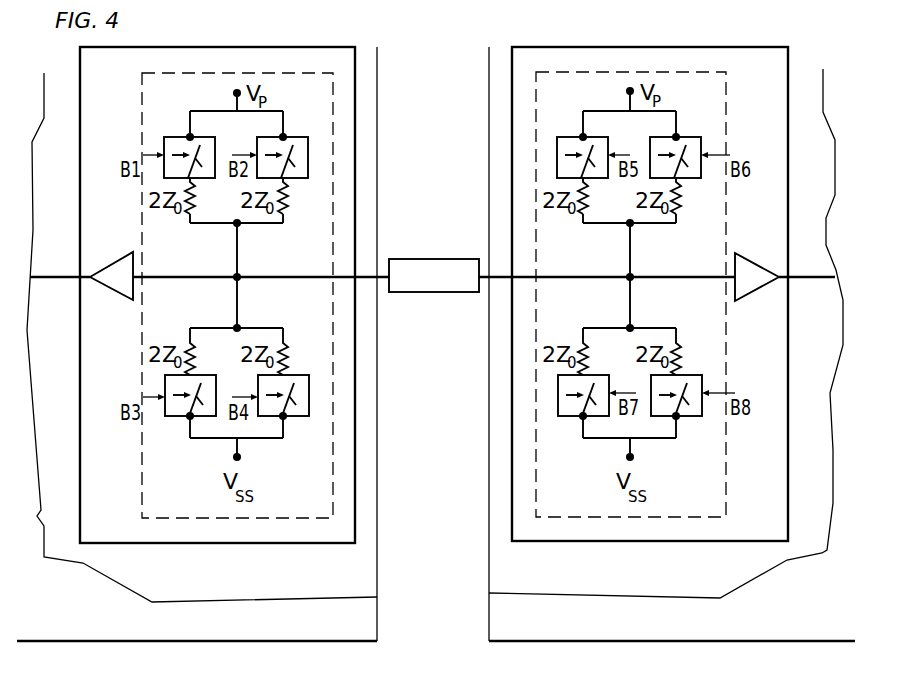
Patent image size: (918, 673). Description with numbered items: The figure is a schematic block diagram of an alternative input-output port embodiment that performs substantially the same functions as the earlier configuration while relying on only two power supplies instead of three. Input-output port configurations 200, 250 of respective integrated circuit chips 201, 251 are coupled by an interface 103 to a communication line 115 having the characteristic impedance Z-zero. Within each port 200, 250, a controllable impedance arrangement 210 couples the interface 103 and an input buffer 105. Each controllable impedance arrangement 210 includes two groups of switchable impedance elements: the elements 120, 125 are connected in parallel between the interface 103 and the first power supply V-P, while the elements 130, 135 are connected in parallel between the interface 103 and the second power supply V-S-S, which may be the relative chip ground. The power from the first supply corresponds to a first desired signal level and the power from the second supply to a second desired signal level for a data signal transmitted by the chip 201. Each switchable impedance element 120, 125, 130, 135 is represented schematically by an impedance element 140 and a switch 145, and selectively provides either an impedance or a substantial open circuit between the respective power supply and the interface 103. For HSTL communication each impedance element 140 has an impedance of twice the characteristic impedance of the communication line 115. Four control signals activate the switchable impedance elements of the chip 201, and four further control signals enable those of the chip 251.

The interface 103 is at (363, 276).
The input buffer 105 is at (126, 302).
The communication line 115 is at (435, 259).
The switchable impedance element 120 is at (378, 144).
The switchable impedance element 125 is at (484, 144).
The switchable impedance element 130 is at (383, 410).
The switchable impedance element 135 is at (486, 410).
The impedance element 140 is at (288, 212).
The switch 145 is at (164, 143).
The input-output port configuration 200 is at (208, 543).
The integrated circuit chip 201 is at (382, 605).
The controllable impedance arrangement 210 is at (143, 488).
The input-output port configuration 250 is at (640, 541).
The integrated circuit chip 251 is at (489, 600).